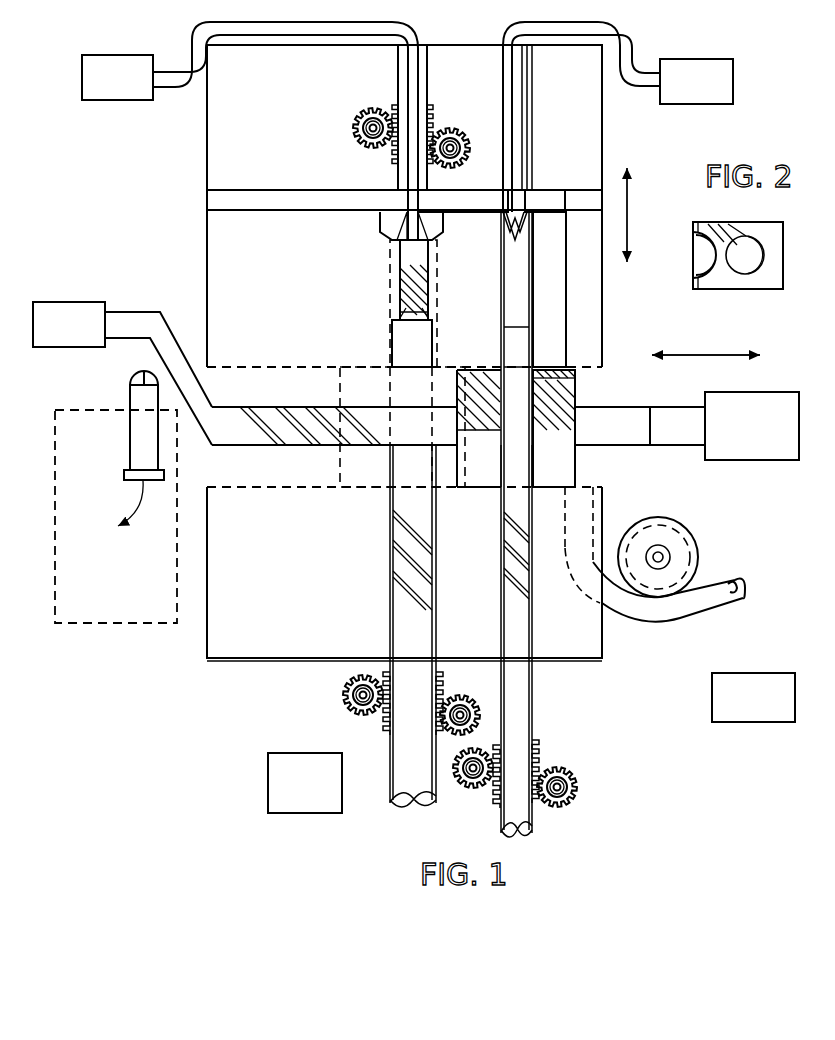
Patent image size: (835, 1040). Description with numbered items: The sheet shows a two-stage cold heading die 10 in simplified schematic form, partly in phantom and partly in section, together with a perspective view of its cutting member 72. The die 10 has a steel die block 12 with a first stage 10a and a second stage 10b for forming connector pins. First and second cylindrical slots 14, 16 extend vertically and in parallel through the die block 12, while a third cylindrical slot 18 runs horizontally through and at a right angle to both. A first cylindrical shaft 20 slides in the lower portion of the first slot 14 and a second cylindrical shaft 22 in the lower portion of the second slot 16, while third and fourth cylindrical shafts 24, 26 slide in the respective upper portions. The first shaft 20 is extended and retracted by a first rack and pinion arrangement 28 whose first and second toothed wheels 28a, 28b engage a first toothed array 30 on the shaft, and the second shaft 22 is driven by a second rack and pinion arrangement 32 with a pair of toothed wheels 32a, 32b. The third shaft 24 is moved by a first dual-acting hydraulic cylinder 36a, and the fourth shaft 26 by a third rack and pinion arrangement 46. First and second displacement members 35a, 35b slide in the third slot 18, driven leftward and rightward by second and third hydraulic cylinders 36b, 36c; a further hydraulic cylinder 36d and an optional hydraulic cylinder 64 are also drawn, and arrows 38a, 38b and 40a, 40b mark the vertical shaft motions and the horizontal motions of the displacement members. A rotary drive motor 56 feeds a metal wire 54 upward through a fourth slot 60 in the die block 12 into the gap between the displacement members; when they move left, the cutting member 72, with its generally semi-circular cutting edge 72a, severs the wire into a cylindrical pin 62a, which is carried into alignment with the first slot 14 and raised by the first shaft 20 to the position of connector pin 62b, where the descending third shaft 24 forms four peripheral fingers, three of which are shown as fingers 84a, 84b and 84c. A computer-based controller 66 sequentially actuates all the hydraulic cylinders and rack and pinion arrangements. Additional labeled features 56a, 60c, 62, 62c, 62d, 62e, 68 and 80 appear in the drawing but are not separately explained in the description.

In FIG. 1, the two-stage cold heading die 10 is at (155, 190).
In FIG. 1, the first stage 10a is at (615, 467).
In FIG. 1, the second stage 10b is at (345, 320).
In FIG. 1, the die block 12 is at (203, 243).
In FIG. 1, the first cylindrical slot 14 is at (528, 112).
In FIG. 1, the second cylindrical slot 16 is at (388, 273).
In FIG. 1, the third cylindrical slot 18 is at (286, 378).
In FIG. 1, the first cylindrical shaft 20 is at (518, 637).
In FIG. 1, the second cylindrical shaft 22 is at (407, 626).
In FIG. 1, the third cylindrical shaft 24 is at (515, 108).
In FIG. 1, the fourth cylindrical shaft 26 is at (405, 172).
In FIG. 1, the first rack and pinion arrangement 28 is at (569, 760).
In FIG. 1, the first toothed wheel 28a is at (464, 785).
In FIG. 1, the second toothed wheel 28b is at (578, 803).
In FIG. 1, the first toothed array 30 is at (541, 753).
In FIG. 1, the second rack and pinion arrangement 32 is at (333, 728).
In FIG. 1, the toothed wheel 32a is at (343, 691).
In FIG. 1, the toothed wheel 32b is at (460, 696).
In FIG. 1, the first displacement member 35a is at (567, 474).
In FIG. 1, the second displacement member 35b is at (462, 372).
In FIG. 1, the first dual-acting hydraulic cylinder 36a is at (733, 60).
In FIG. 1, the second hydraulic cylinder 36b is at (798, 413).
In FIG. 1, the third hydraulic cylinder 36c is at (44, 302).
In FIG. 1, the hydraulic cylinder 36d is at (80, 100).
In FIG. 1, the upward direction 38a is at (631, 193).
In FIG. 1, the downward direction 38b is at (629, 248).
In FIG. 1, the leftward direction 40a is at (682, 336).
In FIG. 1, the rightward direction 40b is at (740, 352).
In FIG. 1, the third rack and pinion arrangement 46 is at (348, 108).
In FIG. 1, the metal wire 54 is at (718, 597).
In FIG. 1, the rotary drive motor 56 is at (692, 528).
In FIG. 1, the pulley groove 56a is at (698, 543).
In FIG. 1, the fourth slot 60 is at (597, 511).
In FIG. 1, the block 60c is at (392, 344).
In FIG. 1, the link 62 is at (605, 458).
In FIG. 1, the cylindrical pin 62a is at (512, 458).
In FIG. 1, the connector pin 62b is at (515, 263).
In FIG. 1, the base bar 62c is at (410, 394).
In FIG. 1, the sleeve 62d is at (402, 258).
In FIG. 1, the pin 62e is at (140, 404).
In FIG. 1, the optional hydraulic cylinder 64 is at (275, 755).
In FIG. 1, the controller 66 is at (744, 717).
In FIG. 1, the optional module 68 is at (72, 627).
In FIG. 1, the cutting member 72 is at (575, 368).
In FIG. 2, the cutting member 72 is at (788, 266).
In FIG. 2, the semi-circular cutting edge 72a is at (712, 262).
In FIG. 1, the joint 80 is at (426, 312).
In FIG. 1, the peripheral finger 84a is at (498, 215).
In FIG. 1, the peripheral finger 84b is at (520, 213).
In FIG. 1, the peripheral finger 84c is at (525, 222).